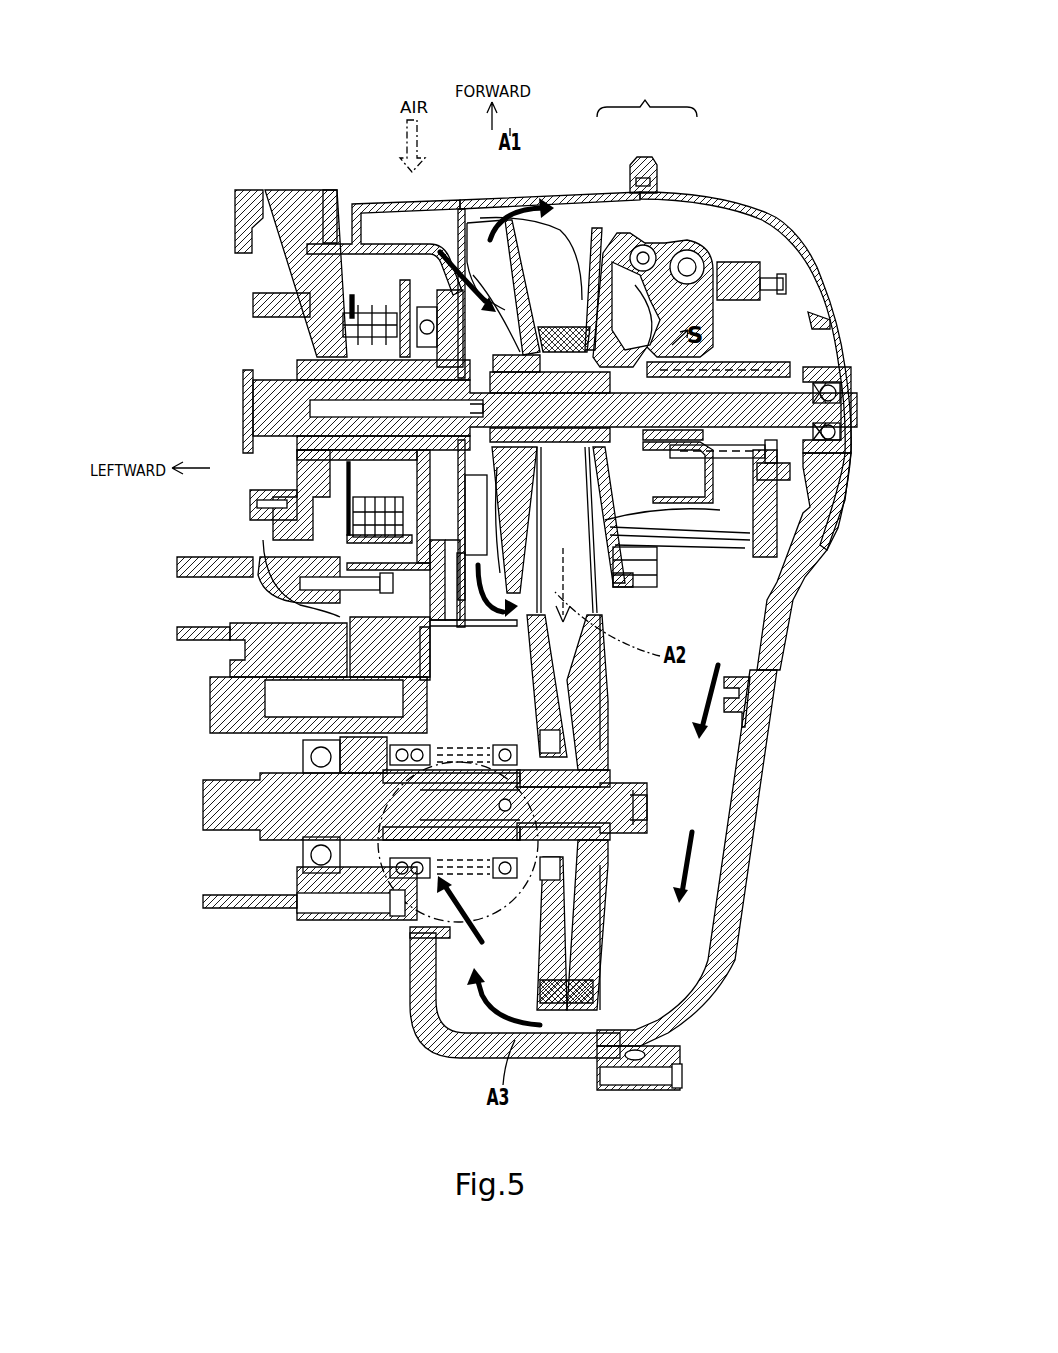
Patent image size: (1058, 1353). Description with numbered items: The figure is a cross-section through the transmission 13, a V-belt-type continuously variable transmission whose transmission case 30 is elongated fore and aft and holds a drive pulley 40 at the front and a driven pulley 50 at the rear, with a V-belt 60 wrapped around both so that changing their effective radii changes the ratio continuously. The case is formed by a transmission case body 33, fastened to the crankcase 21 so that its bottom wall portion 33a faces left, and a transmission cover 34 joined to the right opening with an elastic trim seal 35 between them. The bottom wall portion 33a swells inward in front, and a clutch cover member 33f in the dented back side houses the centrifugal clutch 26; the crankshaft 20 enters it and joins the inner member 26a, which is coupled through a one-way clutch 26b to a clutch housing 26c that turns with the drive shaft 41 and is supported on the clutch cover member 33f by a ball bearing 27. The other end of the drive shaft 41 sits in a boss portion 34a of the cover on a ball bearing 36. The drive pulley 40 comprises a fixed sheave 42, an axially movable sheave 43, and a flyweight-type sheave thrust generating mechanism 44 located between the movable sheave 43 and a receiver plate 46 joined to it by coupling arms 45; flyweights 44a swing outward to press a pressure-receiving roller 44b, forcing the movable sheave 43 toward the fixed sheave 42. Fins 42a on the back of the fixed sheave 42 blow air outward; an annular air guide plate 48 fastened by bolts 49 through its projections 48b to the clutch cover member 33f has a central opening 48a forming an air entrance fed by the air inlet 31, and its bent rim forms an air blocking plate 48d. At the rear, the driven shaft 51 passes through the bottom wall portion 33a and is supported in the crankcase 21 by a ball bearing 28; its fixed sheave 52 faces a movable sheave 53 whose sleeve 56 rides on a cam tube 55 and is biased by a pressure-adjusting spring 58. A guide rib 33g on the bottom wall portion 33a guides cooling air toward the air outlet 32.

The transmission 13 is at (807, 137).
The crankshaft 20 is at (253, 386).
The crankcase 21 is at (282, 190).
The centrifugal clutch 26 is at (323, 455).
The inner member 26a is at (390, 453).
The one-way clutch 26b is at (420, 372).
The clutch housing 26c is at (375, 545).
The ball bearing 27 is at (400, 300).
The ball bearing 28 is at (275, 905).
The transmission case 30 is at (655, 313).
The air inlet 31 is at (362, 200).
The air outlet 32 is at (400, 933).
The transmission case body 33 is at (593, 258).
The bottom wall portion 33a is at (432, 628).
The clutch cover member 33f is at (447, 555).
The guide rib 33g is at (415, 985).
The transmission cover 34 is at (677, 190).
The boss portion 34a is at (825, 360).
The trim seal 35 is at (655, 1050).
The ball bearing 36 is at (837, 500).
The drive pulley 40 is at (700, 370).
The drive shaft 41 is at (712, 375).
The fixed sheave 42 is at (518, 364).
The fins 42a is at (477, 200).
The movable sheave 43 is at (607, 253).
The sheave thrust generating mechanism 44 is at (659, 252).
The flyweights 44a is at (665, 322).
The pressure-receiving roller 44b is at (683, 252).
The coupling arms 45 is at (745, 270).
The receiver plate 46 is at (752, 500).
The air guide plate 48 is at (526, 404).
The opening 48a is at (507, 276).
The projections 48b is at (500, 567).
The air blocking plate 48d is at (472, 626).
The bolts 49 is at (470, 530).
The driven pulley 50 is at (727, 963).
The driven shaft 51 is at (648, 812).
The fixed sheave 52 is at (598, 695).
The movable sheave 53 is at (533, 700).
The cam tube 55 is at (433, 760).
The sleeve 56 is at (533, 735).
The pressure-adjusting spring 58 is at (482, 875).
The V-belt 60 is at (597, 585).